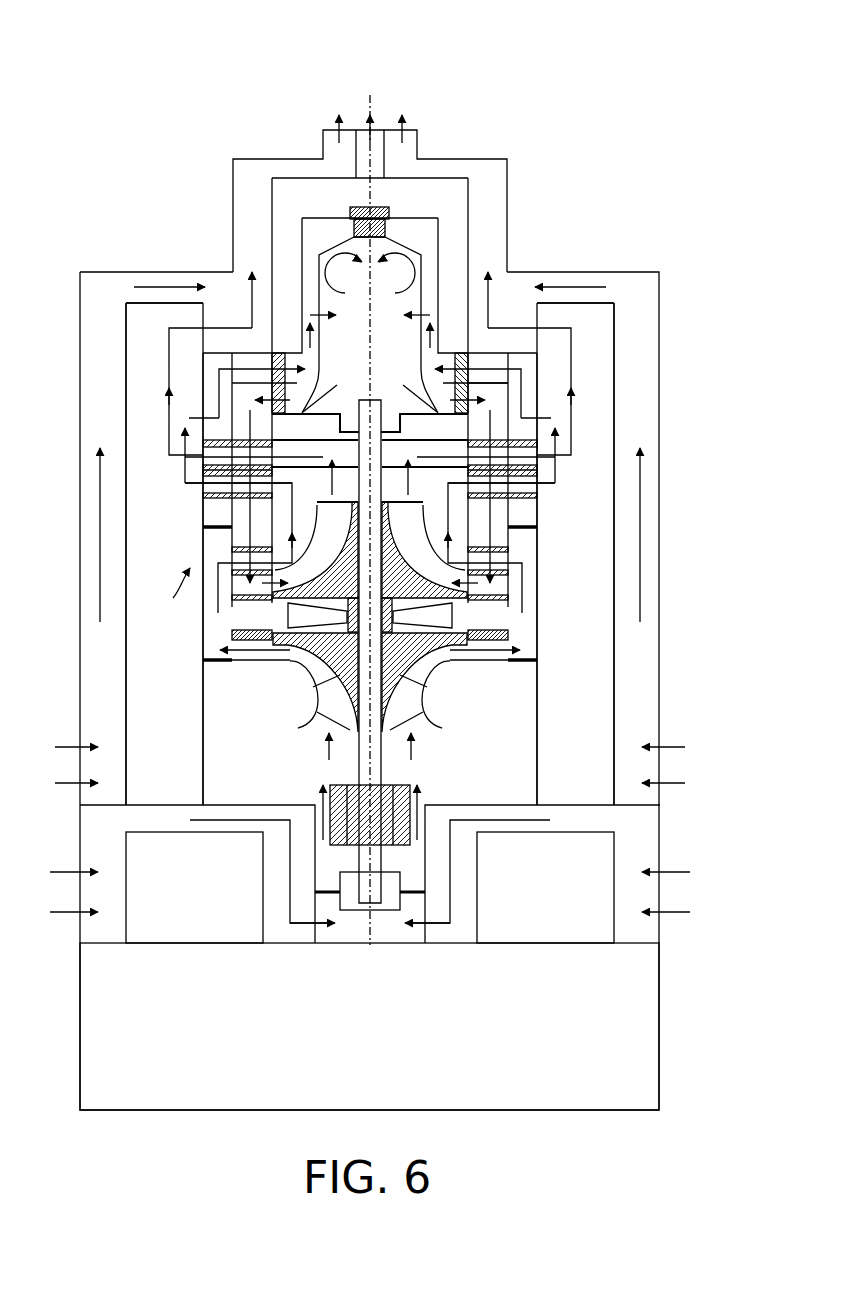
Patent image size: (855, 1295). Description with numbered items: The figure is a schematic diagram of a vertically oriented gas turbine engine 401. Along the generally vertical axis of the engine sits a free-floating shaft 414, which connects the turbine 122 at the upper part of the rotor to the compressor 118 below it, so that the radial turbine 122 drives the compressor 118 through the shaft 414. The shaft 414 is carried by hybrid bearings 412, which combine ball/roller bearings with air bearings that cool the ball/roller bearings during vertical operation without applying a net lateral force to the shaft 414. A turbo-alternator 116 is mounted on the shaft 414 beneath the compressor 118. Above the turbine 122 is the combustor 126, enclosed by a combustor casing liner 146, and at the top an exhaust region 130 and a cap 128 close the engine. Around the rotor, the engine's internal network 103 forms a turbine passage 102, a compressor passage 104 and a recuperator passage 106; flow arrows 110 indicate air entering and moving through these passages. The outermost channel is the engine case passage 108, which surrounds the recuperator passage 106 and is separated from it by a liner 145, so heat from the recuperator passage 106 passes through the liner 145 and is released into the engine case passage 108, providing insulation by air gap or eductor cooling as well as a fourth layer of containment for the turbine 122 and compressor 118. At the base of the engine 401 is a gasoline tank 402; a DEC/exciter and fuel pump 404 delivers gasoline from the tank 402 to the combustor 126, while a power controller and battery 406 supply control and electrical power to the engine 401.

The gas turbine engine 401 is at (82, 88).
The exhaust outlet 130 is at (370, 505).
The end cap 128 is at (392, 213).
The combustor 126 is at (425, 264).
The free-floating shaft 414 is at (372, 408).
The engine case passage 108 is at (100, 418).
The liner 145 is at (126, 331).
The combustor casing liner 146 is at (75, 494).
The turbine passage 102 is at (247, 517).
The turbine 122 is at (410, 535).
The internal network 103 is at (166, 590).
The recuperator passage 106 is at (155, 688).
The compressor passage 104 is at (530, 387).
The compressor 118 is at (427, 667).
The turbo-alternator 116 is at (400, 786).
The inlet air 110 is at (370, 829).
The DEC/exciter and fuel pump 404 is at (194, 887).
The power controller and battery 406 is at (545, 887).
The gasoline tank 402 is at (369, 1026).
The hybrid bearings 412 is at (388, 897).